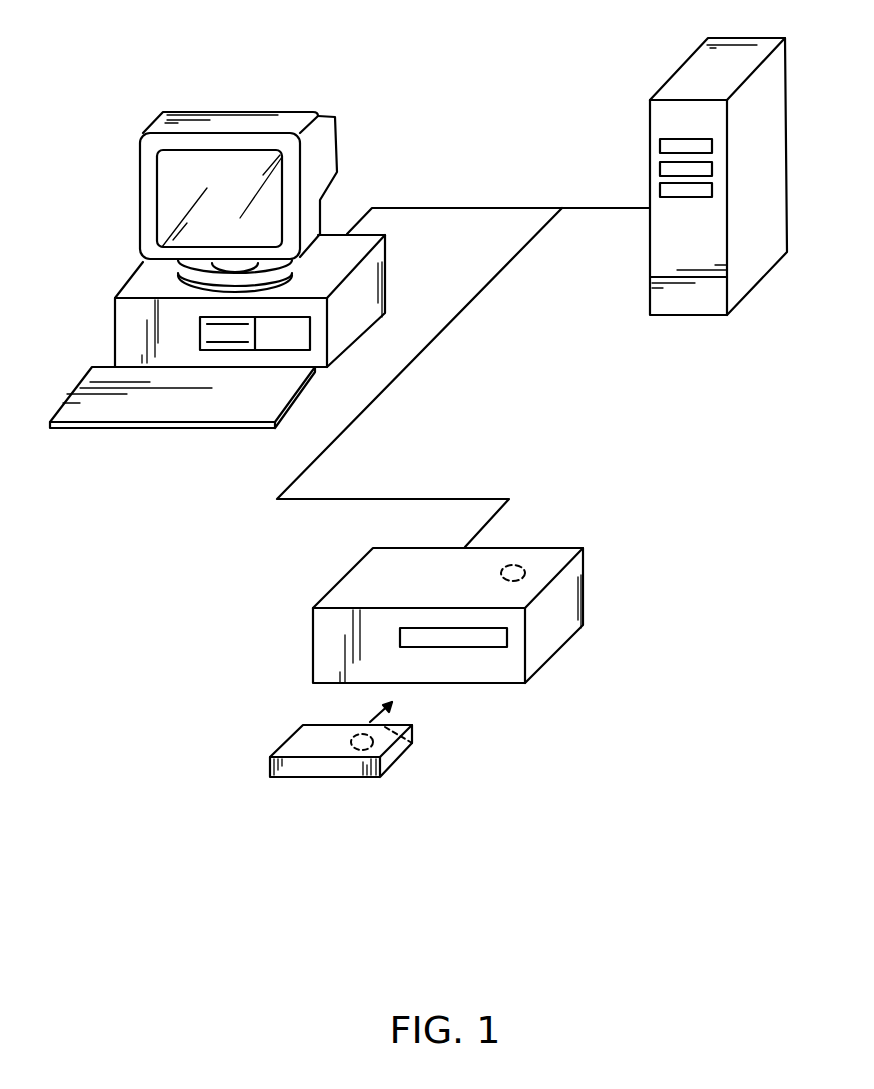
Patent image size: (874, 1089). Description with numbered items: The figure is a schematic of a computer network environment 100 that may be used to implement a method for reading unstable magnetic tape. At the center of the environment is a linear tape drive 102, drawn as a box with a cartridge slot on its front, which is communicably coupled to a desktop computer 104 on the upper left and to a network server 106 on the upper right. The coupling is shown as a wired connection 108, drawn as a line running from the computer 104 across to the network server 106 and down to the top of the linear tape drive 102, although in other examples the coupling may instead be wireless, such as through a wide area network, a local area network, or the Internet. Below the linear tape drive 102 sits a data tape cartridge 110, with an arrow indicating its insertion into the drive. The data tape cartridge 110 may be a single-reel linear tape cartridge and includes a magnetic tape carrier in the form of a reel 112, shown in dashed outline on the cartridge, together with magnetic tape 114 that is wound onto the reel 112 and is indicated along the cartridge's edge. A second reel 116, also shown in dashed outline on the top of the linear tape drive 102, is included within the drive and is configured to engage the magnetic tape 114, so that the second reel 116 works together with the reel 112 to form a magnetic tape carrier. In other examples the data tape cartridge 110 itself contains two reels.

The computer network environment 100 is at (470, 1000).
The linear tape drive 102 is at (362, 582).
The computer 104 is at (145, 282).
The network server 106 is at (695, 85).
The wired connection 108 is at (482, 295).
The data tape cartridge 110 is at (397, 752).
The reel 112 is at (360, 750).
The magnetic tape 114 is at (400, 735).
The second reel 116 is at (512, 562).